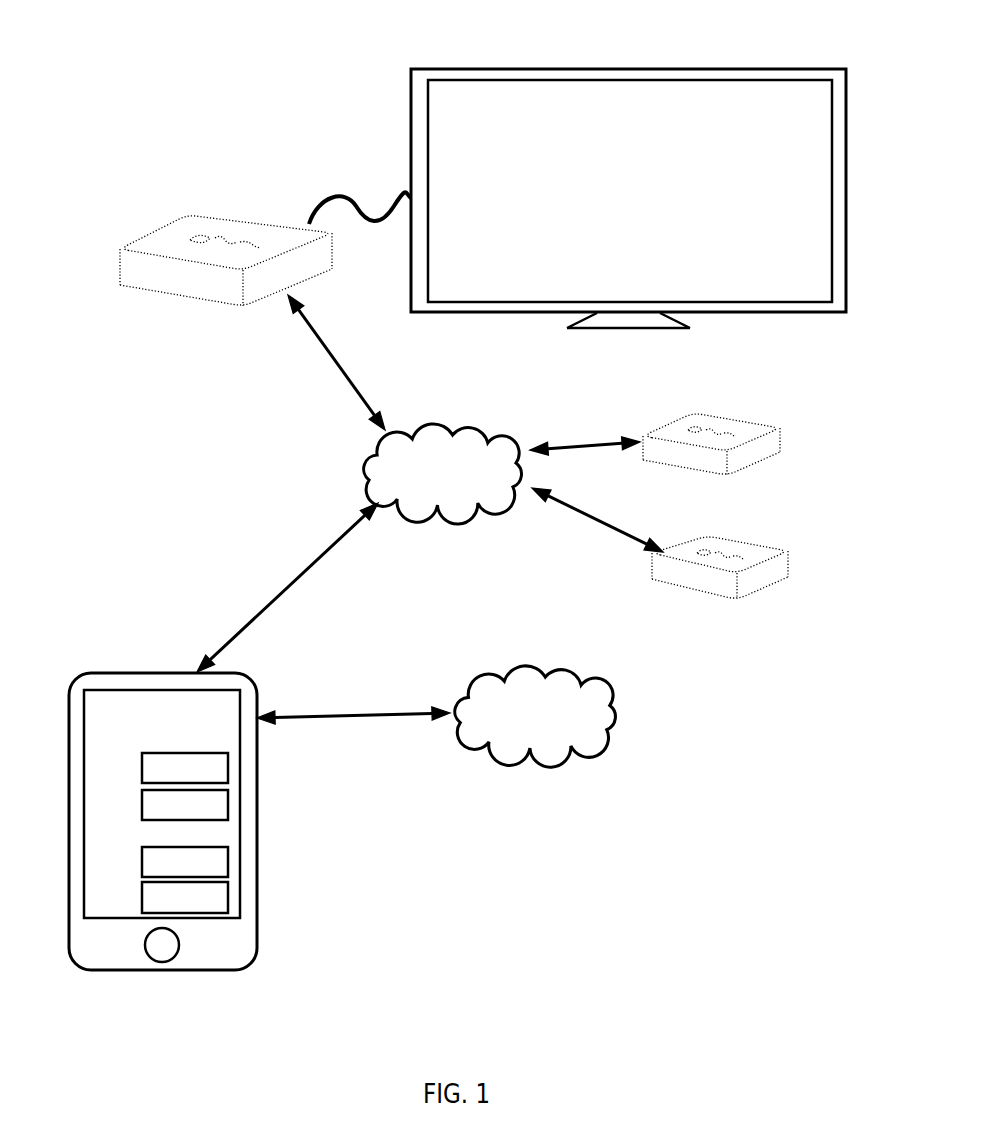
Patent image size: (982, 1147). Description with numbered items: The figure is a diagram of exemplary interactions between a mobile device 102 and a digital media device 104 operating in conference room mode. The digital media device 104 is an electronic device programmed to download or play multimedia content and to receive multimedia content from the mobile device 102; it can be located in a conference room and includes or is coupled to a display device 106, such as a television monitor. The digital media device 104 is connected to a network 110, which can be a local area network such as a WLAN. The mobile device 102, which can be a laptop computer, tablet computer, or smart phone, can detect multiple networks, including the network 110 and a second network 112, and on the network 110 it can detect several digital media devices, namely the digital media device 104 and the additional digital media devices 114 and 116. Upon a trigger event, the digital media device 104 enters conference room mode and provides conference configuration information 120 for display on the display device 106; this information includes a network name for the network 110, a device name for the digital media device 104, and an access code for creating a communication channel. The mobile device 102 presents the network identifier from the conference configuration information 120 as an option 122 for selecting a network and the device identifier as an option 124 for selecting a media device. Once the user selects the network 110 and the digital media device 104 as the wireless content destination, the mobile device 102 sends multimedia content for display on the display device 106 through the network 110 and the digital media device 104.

The mobile device 102 is at (148, 672).
The digital media device 104 is at (255, 218).
The display device 106 is at (410, 128).
The network 110 is at (358, 465).
The network 112 is at (492, 668).
The digital media device 114 is at (735, 418).
The digital media device 116 is at (745, 542).
The conference configuration information 120 is at (595, 79).
The option for selecting a network 122 is at (228, 768).
The option for selecting a media device 124 is at (228, 860).